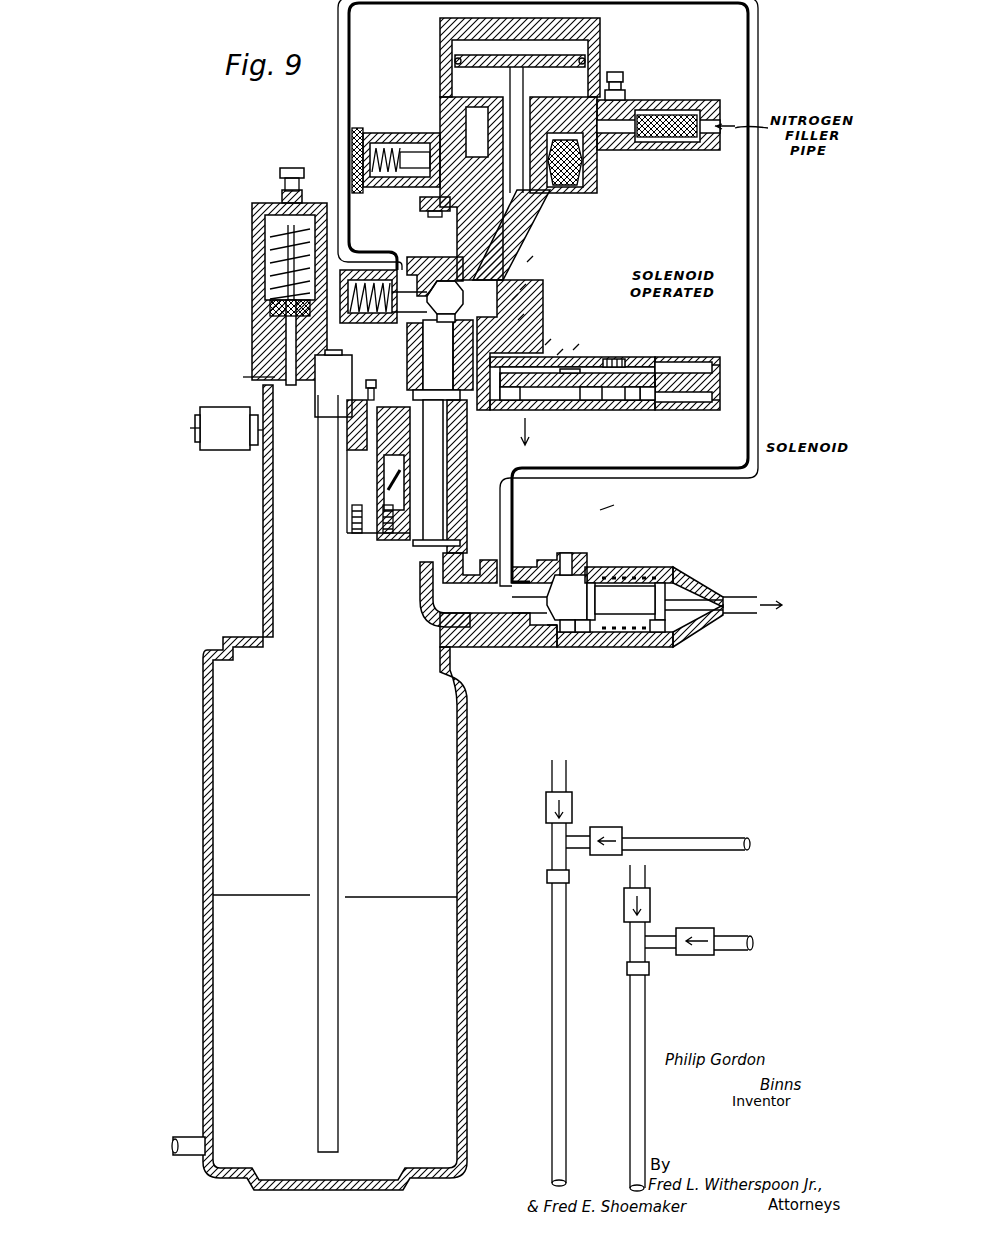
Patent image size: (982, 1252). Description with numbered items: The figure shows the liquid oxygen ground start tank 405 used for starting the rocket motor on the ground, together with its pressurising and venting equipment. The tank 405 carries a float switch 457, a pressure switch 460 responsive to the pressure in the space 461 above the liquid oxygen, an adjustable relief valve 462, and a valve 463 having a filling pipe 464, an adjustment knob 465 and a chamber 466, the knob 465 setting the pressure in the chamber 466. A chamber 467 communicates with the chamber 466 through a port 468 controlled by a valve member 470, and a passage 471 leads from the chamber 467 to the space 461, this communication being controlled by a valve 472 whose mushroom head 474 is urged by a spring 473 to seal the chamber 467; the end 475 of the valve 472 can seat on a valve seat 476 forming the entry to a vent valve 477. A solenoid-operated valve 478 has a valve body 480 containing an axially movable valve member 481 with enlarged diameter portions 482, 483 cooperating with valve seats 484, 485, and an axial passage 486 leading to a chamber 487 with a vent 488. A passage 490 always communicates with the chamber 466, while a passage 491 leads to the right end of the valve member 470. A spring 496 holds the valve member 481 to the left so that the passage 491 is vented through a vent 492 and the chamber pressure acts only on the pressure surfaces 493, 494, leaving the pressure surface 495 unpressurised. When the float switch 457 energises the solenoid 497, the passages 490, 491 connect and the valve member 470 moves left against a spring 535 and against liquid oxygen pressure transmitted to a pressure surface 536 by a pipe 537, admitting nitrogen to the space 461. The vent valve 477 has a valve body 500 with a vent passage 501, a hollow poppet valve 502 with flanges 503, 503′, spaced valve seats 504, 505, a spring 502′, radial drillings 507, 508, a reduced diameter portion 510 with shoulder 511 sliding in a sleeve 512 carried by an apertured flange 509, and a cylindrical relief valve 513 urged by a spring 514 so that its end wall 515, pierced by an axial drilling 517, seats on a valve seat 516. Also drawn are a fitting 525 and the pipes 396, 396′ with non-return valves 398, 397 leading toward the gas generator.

The pipe 537 is at (349, 52).
The valve 463 is at (611, 45).
The adjustment knob 465 is at (360, 130).
The filling pipe 464 is at (720, 150).
The chamber 466 is at (583, 188).
The port 468 is at (540, 245).
The pressure surface 494 is at (530, 262).
The pressure surface 495 is at (522, 290).
The passage 490 is at (515, 300).
The passage 491 is at (520, 320).
The enlarged diameter portion 482 is at (547, 345).
The valve body 480 is at (558, 355).
The enlarged diameter portion 483 is at (578, 354).
The solenoid-operated valve 478 is at (620, 348).
The vent 488 is at (650, 357).
The valve member 470 is at (435, 292).
The spring 535 is at (362, 280).
The pressure surface 493 is at (452, 272).
The pressure surface 536 is at (372, 327).
The chamber 467 is at (435, 347).
The mushroom head 474 is at (360, 385).
The float switch 457 is at (320, 367).
The passage 471 is at (355, 427).
The pressure switch 460 is at (232, 455).
The adjustable relief valve 462 is at (252, 255).
The spring 473 is at (458, 416).
The valve 472 is at (437, 462).
The valve seat 485 is at (572, 410).
The chamber 487 is at (615, 410).
The spring 496 is at (652, 410).
The valve seat 484 is at (530, 410).
The axial passage 486 is at (590, 410).
The valve member 481 is at (633, 410).
The solenoid 497 is at (765, 447).
The vent 492 is at (530, 455).
The end 475 is at (425, 548).
The valve seat 476 is at (424, 566).
The vent valve 477 is at (576, 553).
The radial drillings 507 is at (566, 578).
The radial drillings 508 is at (600, 572).
The flange 503′ is at (620, 575).
The spring 502′ is at (652, 585).
The valve body 500 is at (675, 570).
The sleeve 512 is at (690, 590).
The axial drilling 517 is at (548, 600).
The valve seat 516 is at (556, 594).
The valve seat 504 is at (512, 640).
The end wall 515 is at (560, 640).
The flange 503 is at (575, 640).
The valve seat 505 is at (590, 647).
The spring 514 is at (618, 647).
The cylindrical relief valve 513 is at (610, 647).
The hollow poppet valve 502 is at (650, 647).
The shoulder 511 is at (665, 647).
The apertured flange 509 is at (680, 615).
The reduced diameter portion 510 is at (695, 640).
The vent passage 501 is at (735, 613).
The space 461 is at (335, 773).
The liquid oxygen ground start tank 405 is at (478, 766).
The drain fitting 525 is at (186, 1140).
The non-return valve 398 is at (610, 828).
The pipe 396 is at (722, 840).
The non-return valve 397 is at (705, 928).
The pipe 396′ is at (733, 940).